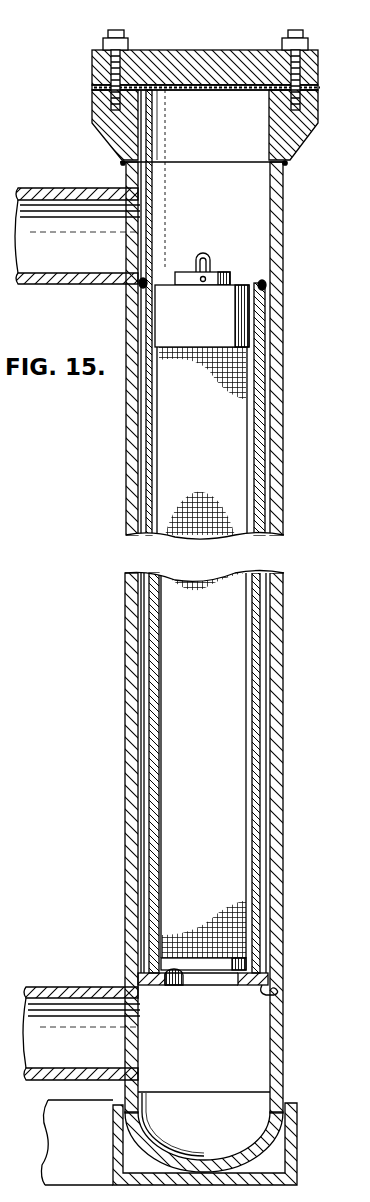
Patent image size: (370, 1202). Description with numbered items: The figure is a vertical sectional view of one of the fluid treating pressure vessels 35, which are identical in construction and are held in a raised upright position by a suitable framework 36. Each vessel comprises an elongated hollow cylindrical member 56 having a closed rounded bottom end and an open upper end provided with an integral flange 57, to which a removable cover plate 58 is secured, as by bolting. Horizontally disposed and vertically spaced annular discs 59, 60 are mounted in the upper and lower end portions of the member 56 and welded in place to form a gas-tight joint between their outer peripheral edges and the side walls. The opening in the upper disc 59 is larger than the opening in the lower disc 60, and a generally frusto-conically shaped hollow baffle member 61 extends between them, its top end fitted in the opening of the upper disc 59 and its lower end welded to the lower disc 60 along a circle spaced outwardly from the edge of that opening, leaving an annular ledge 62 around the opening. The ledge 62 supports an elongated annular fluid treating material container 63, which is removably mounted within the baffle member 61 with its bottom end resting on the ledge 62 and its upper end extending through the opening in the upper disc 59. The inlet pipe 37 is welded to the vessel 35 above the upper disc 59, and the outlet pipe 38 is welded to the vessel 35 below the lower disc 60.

The fluid treating cylindrical pressure vessel 35 is at (307, 599).
The framework 36 is at (297, 1172).
The inlet pipe 37 is at (70, 172).
The outlet pipe 38 is at (45, 986).
The elongated hollow cylindrical member 56 is at (283, 667).
The integral flange 57 is at (300, 140).
The removable cover plate 58 is at (224, 56).
The upper annular disc 59 is at (284, 297).
The lower annular disc 60 is at (278, 994).
The frusto-conically shaped hollow baffle member 61 is at (262, 474).
The annular ledge 62 is at (181, 986).
The annular fluid treating material container 63 is at (150, 476).